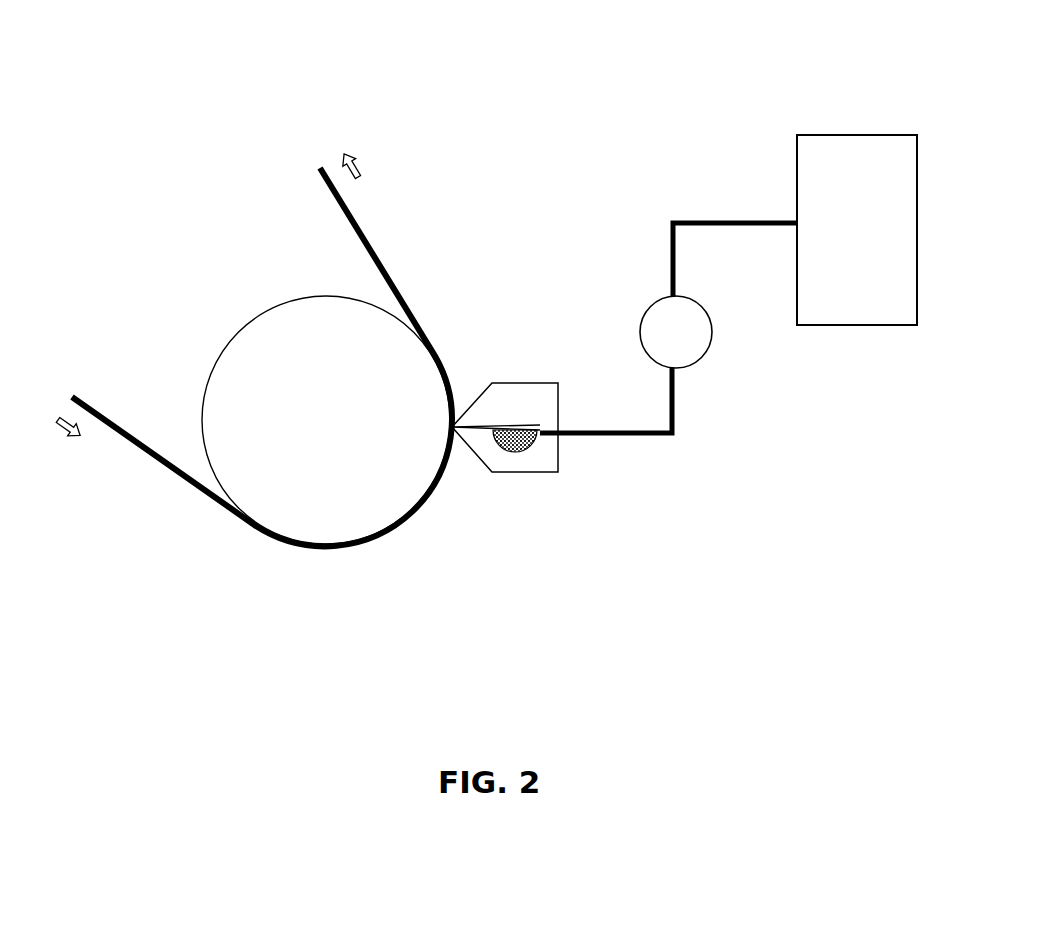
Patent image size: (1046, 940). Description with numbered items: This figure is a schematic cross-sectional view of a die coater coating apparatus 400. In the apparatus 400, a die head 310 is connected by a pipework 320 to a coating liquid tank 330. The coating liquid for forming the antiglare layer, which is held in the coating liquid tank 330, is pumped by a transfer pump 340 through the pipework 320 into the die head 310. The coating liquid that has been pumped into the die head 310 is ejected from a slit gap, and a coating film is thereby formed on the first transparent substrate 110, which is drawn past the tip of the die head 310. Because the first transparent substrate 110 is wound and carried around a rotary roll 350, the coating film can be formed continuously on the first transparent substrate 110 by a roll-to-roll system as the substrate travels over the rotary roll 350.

The coating apparatus 400 is at (517, 42).
The first transparent substrate 110 is at (163, 463).
The rotary roll 350 is at (323, 490).
The die head 310 is at (537, 458).
The pipework 320 is at (677, 422).
The coating liquid tank 330 is at (848, 282).
The transfer pump 340 is at (653, 345).